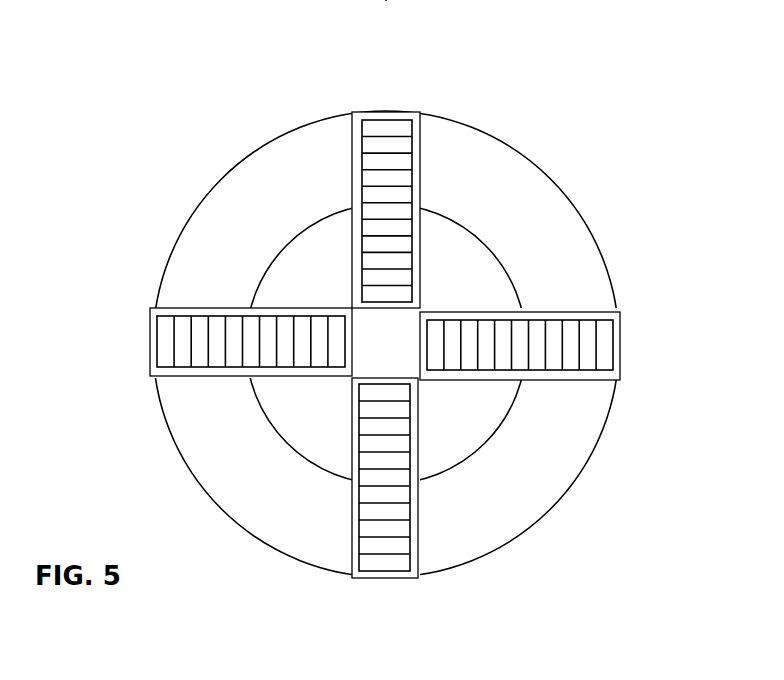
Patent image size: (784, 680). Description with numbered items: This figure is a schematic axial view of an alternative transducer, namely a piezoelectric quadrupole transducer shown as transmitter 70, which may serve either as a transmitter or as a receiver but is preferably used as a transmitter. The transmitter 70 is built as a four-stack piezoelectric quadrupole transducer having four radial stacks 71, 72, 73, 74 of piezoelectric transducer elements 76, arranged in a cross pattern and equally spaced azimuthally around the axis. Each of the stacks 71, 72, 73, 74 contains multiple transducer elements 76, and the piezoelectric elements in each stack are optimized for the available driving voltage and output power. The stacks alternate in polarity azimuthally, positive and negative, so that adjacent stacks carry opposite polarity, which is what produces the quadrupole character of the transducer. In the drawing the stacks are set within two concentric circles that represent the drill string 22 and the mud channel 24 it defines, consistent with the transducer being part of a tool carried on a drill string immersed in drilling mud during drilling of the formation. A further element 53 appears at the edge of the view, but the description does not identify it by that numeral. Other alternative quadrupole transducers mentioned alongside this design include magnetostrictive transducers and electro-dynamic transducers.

The drill string 22 is at (291, 169).
The mud channel 24 is at (313, 264).
The connection element 53 is at (387, 0).
The transmitter 70 is at (566, 88).
The stack 71 is at (421, 162).
The stack 72 is at (571, 380).
The stack 73 is at (350, 528).
The stack 74 is at (200, 306).
The piezoelectric transducer elements 76 is at (363, 152).